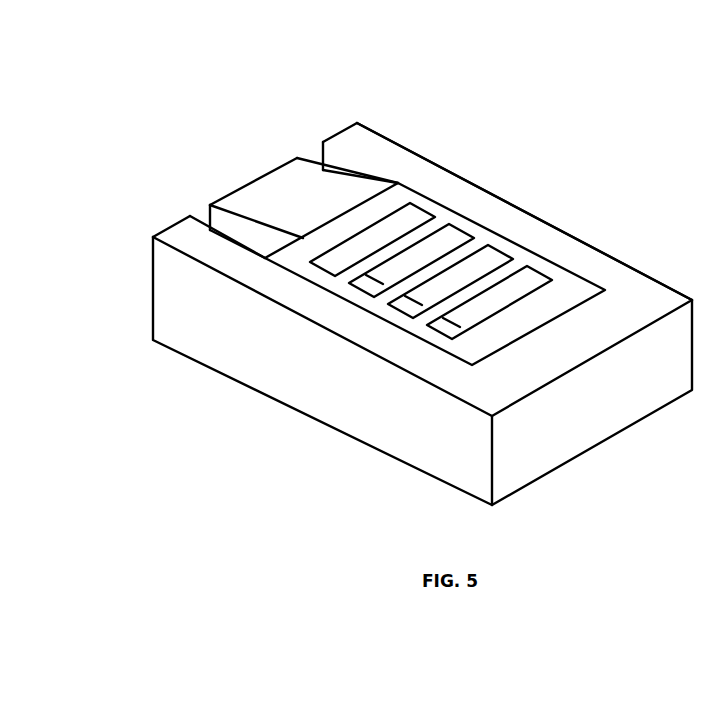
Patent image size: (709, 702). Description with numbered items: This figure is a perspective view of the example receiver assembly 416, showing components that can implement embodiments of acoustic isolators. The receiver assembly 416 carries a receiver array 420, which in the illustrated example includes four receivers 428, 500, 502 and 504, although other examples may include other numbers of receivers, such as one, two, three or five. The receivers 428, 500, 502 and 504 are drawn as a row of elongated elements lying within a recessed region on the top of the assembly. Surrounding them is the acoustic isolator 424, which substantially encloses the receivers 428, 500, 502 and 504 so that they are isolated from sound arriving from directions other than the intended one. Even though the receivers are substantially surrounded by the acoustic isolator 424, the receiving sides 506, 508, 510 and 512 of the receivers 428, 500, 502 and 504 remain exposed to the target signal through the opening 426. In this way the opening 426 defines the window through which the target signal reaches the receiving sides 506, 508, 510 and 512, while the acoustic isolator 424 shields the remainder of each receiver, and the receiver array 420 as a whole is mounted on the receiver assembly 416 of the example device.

The receiver assembly 416 is at (340, 477).
The receiver array 420 is at (356, 285).
The acoustic isolator 424 is at (360, 141).
The opening 426 is at (580, 276).
The receiver 428 is at (517, 288).
The receiver 500 is at (485, 262).
The receiver 502 is at (450, 242).
The receiver 504 is at (412, 220).
The receiving side 506 is at (443, 318).
The receiving side 508 is at (405, 296).
The receiving side 510 is at (366, 275).
The receiving side 512 is at (343, 262).